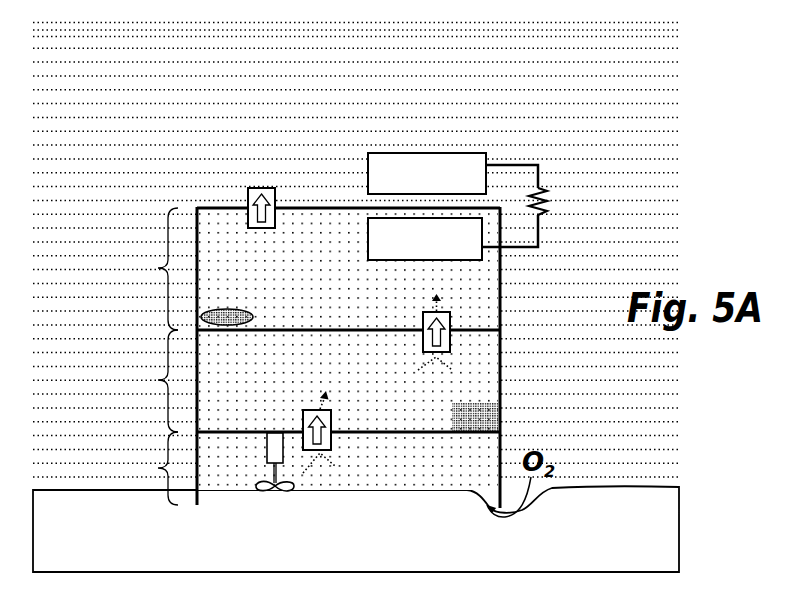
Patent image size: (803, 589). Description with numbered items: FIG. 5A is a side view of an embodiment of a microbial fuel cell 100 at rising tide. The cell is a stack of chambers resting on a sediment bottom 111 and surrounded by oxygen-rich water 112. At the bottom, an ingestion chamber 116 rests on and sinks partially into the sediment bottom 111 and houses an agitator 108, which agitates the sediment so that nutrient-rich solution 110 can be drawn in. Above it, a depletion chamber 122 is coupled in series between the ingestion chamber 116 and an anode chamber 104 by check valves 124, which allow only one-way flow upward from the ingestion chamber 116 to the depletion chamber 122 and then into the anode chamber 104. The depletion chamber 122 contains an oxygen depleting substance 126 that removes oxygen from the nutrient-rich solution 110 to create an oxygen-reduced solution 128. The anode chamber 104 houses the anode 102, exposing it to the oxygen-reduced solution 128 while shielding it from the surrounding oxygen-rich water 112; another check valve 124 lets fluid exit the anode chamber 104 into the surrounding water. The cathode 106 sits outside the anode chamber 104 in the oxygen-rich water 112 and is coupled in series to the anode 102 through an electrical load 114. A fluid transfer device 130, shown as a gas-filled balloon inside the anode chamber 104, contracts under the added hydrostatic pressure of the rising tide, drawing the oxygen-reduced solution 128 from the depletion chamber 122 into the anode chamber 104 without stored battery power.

The microbial fuel cell 100 is at (562, 127).
The anode 102 is at (368, 245).
The anode chamber 104 is at (157, 269).
The cathode 106 is at (368, 180).
The agitator 108 is at (272, 500).
The nutrient-rich solution 110 is at (438, 474).
The sediment bottom 111 is at (398, 554).
The oxygen-rich water 112 is at (143, 132).
The electrical load 114 is at (556, 194).
The ingestion chamber 116 is at (157, 469).
The depletion chamber 122 is at (157, 380).
The check valves 124 is at (248, 194).
The oxygen depleting substance 126 is at (452, 420).
The oxygen-reduced solution 128 is at (338, 300).
The fluid transfer device 130 is at (229, 309).